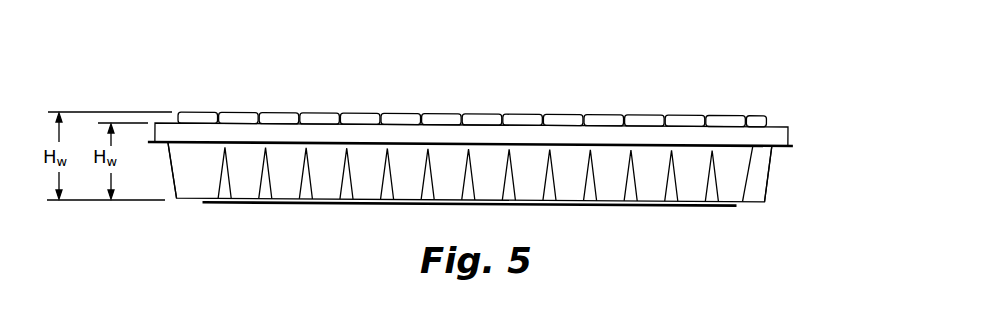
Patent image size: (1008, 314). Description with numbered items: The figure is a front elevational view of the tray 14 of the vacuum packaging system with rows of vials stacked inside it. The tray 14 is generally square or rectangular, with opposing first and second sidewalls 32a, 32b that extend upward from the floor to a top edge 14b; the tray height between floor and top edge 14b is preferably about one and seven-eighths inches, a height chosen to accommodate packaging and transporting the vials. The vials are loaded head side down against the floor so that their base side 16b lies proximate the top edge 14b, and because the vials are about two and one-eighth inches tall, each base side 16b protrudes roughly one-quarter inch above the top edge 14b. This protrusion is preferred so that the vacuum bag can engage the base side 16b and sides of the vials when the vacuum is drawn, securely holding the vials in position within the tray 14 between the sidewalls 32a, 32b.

The tray 14 is at (640, 213).
The top edge 14b is at (780, 124).
The base side 16b is at (233, 112).
The first sidewall 32a is at (773, 177).
The second sidewall 32b is at (168, 172).